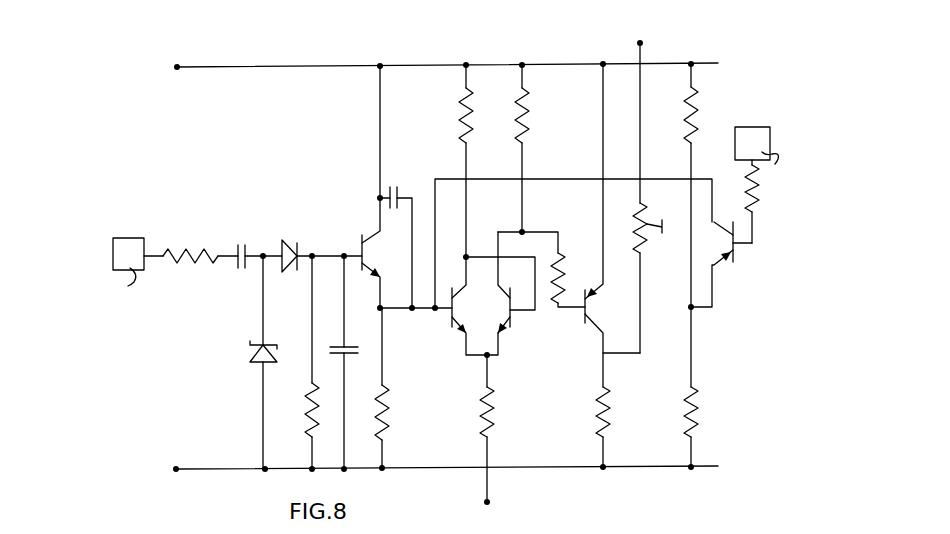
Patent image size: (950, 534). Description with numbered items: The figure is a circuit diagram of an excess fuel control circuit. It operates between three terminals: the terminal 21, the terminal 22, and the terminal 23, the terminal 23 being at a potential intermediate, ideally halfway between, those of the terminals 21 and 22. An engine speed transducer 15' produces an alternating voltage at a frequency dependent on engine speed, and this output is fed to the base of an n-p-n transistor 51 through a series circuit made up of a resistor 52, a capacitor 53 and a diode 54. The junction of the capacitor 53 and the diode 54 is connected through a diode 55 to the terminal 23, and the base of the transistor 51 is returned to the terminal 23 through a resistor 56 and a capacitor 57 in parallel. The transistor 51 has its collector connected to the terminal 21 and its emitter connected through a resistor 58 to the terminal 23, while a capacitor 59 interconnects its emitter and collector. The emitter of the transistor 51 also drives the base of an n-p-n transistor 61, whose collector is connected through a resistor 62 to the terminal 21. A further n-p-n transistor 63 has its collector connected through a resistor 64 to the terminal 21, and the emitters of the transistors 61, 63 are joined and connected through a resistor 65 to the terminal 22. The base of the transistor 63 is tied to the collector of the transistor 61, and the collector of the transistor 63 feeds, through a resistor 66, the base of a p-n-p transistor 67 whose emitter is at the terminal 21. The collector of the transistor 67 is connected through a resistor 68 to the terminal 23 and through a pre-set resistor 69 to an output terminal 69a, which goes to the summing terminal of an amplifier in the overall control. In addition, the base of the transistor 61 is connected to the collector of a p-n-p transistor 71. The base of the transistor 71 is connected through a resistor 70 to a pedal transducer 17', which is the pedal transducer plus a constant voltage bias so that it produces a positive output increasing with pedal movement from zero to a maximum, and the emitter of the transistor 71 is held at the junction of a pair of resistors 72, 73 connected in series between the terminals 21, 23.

The transducer 15' is at (87, 240).
The transducer 17' is at (803, 130).
The terminal 21 is at (176, 65).
The terminal 22 is at (493, 503).
The terminal 23 is at (175, 468).
The n-p-n transistor 51 is at (362, 221).
The resistor 52 is at (193, 258).
The capacitor 53 is at (243, 237).
The diode 54 is at (287, 237).
The diode 55 is at (248, 360).
The resistor 56 is at (306, 409).
The capacitor 57 is at (360, 353).
The resistor 58 is at (390, 427).
The capacitor 59 is at (393, 183).
The n-p-n transistor 61 is at (388, 391).
The resistor 62 is at (453, 115).
The n-p-n transistor 63 is at (509, 339).
The resistor 64 is at (533, 120).
The resistor 65 is at (493, 417).
The resistor 66 is at (565, 267).
The p-n-p transistor 67 is at (589, 338).
The resistor 68 is at (613, 418).
The pre-set resistor 69 is at (648, 248).
The output terminal 69a is at (645, 40).
The resistor 70 is at (740, 187).
The p-n-p transistor 71 is at (731, 276).
The resistor 72 is at (685, 97).
The resistor 73 is at (703, 418).